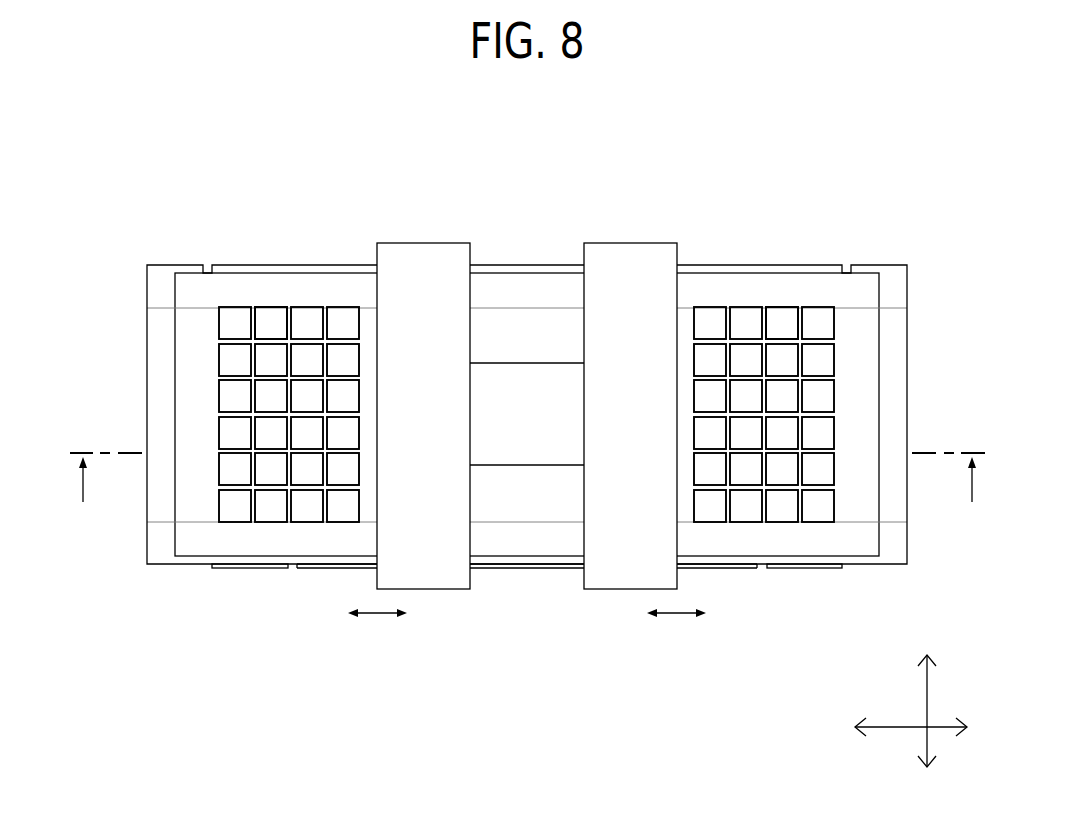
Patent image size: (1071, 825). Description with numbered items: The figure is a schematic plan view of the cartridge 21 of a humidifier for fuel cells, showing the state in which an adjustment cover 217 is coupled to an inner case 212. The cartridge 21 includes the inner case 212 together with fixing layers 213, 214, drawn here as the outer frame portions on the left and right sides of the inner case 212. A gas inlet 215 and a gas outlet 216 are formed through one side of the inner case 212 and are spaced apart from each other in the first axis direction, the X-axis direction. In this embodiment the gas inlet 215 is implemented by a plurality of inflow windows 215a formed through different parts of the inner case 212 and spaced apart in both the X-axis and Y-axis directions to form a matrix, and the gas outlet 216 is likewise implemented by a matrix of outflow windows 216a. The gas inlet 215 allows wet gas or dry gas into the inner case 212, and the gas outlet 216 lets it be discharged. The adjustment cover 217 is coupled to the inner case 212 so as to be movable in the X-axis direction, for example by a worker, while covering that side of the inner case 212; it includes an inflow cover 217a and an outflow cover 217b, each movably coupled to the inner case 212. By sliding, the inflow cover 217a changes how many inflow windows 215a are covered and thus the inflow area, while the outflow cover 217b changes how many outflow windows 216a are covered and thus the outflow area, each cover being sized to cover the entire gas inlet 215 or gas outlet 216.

The cartridge 21 is at (93, 124).
The inner case 212 is at (540, 543).
The fixing layer 213 is at (146, 412).
The fixing layer 214 is at (909, 412).
The gas inlet 215 is at (284, 414).
The inflow window 215a is at (262, 322).
The gas outlet 216 is at (770, 414).
The outflow window 216a is at (792, 322).
The adjustment cover 217 is at (527, 342).
The inflow cover 217a is at (423, 243).
The outflow cover 217b is at (628, 363).